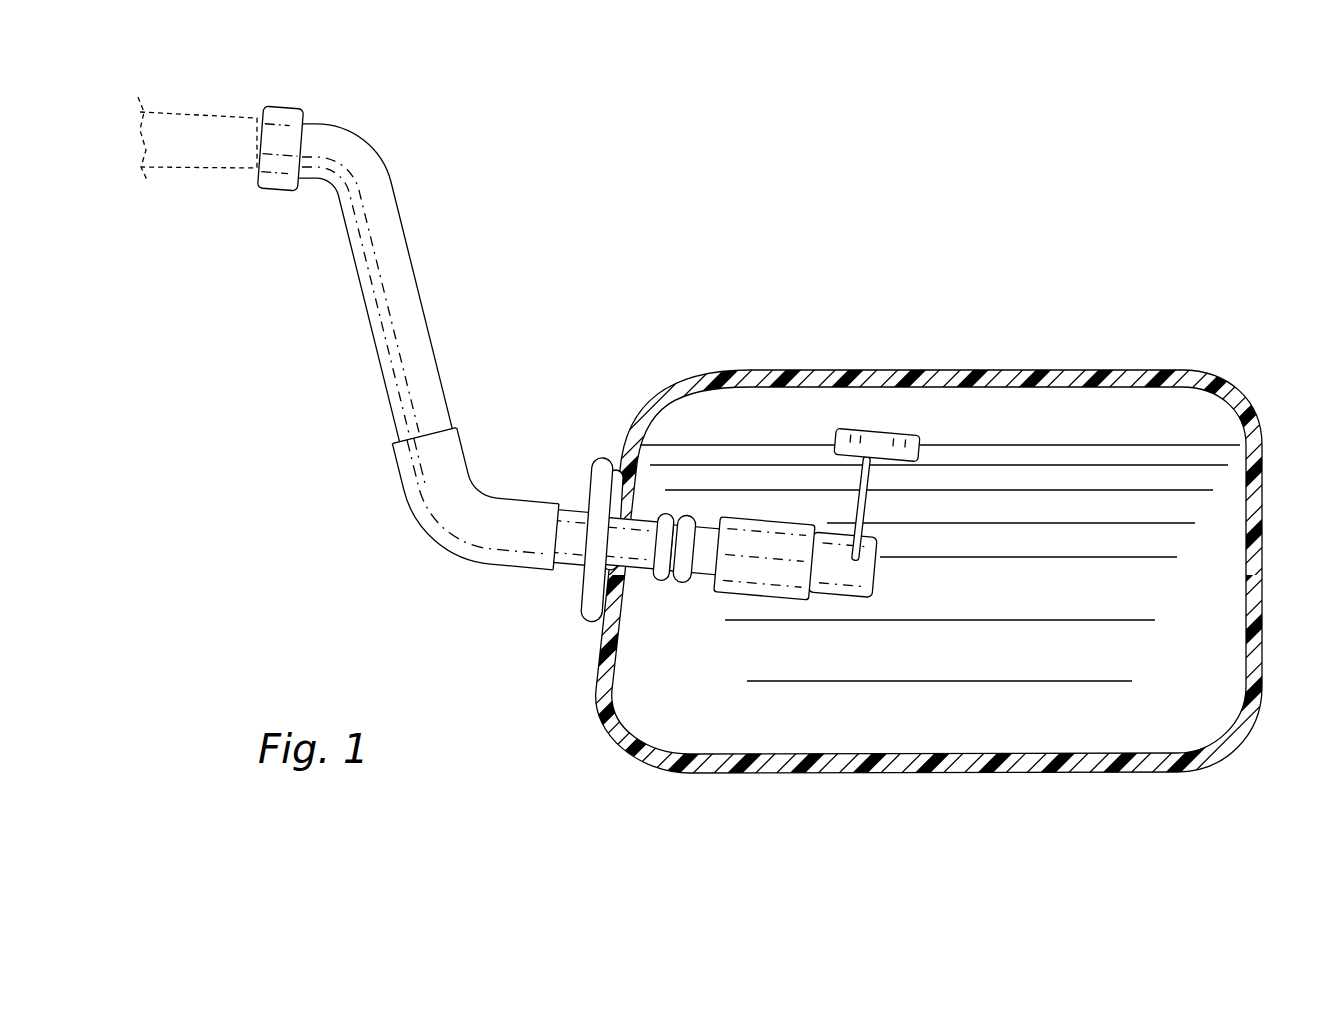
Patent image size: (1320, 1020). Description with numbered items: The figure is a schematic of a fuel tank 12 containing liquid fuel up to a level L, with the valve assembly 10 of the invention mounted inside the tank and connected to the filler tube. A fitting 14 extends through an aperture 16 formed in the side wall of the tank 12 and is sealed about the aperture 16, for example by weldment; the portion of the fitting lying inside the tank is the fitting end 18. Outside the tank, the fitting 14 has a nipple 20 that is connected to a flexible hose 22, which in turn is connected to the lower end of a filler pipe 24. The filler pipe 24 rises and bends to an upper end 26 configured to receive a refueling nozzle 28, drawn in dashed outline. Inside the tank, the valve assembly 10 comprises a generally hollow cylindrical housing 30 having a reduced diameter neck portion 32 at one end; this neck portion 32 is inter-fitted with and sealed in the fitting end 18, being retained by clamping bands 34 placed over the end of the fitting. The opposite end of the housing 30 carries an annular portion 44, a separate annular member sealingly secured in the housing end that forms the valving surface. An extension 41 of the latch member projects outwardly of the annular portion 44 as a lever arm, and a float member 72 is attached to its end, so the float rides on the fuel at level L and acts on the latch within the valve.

The valve assembly 10 is at (797, 498).
The fuel tank 12 is at (1088, 370).
The fitting 14 is at (601, 457).
The aperture 16 is at (586, 568).
The fitting end portion within the tank 18 is at (640, 571).
The nipple 20 is at (575, 509).
The flexible hose 22 is at (432, 513).
The filler pipe 24 is at (413, 268).
The upper end of filler pipe 26 is at (284, 107).
The supply hose 28 is at (192, 168).
The housing 30 is at (767, 597).
The neck portion 32 is at (705, 574).
The clamping bands 34 is at (688, 512).
The extension 41 is at (877, 506).
The annular portion 44 is at (840, 597).
The float member 72 is at (921, 445).
The liquid fuel level L is at (1187, 444).